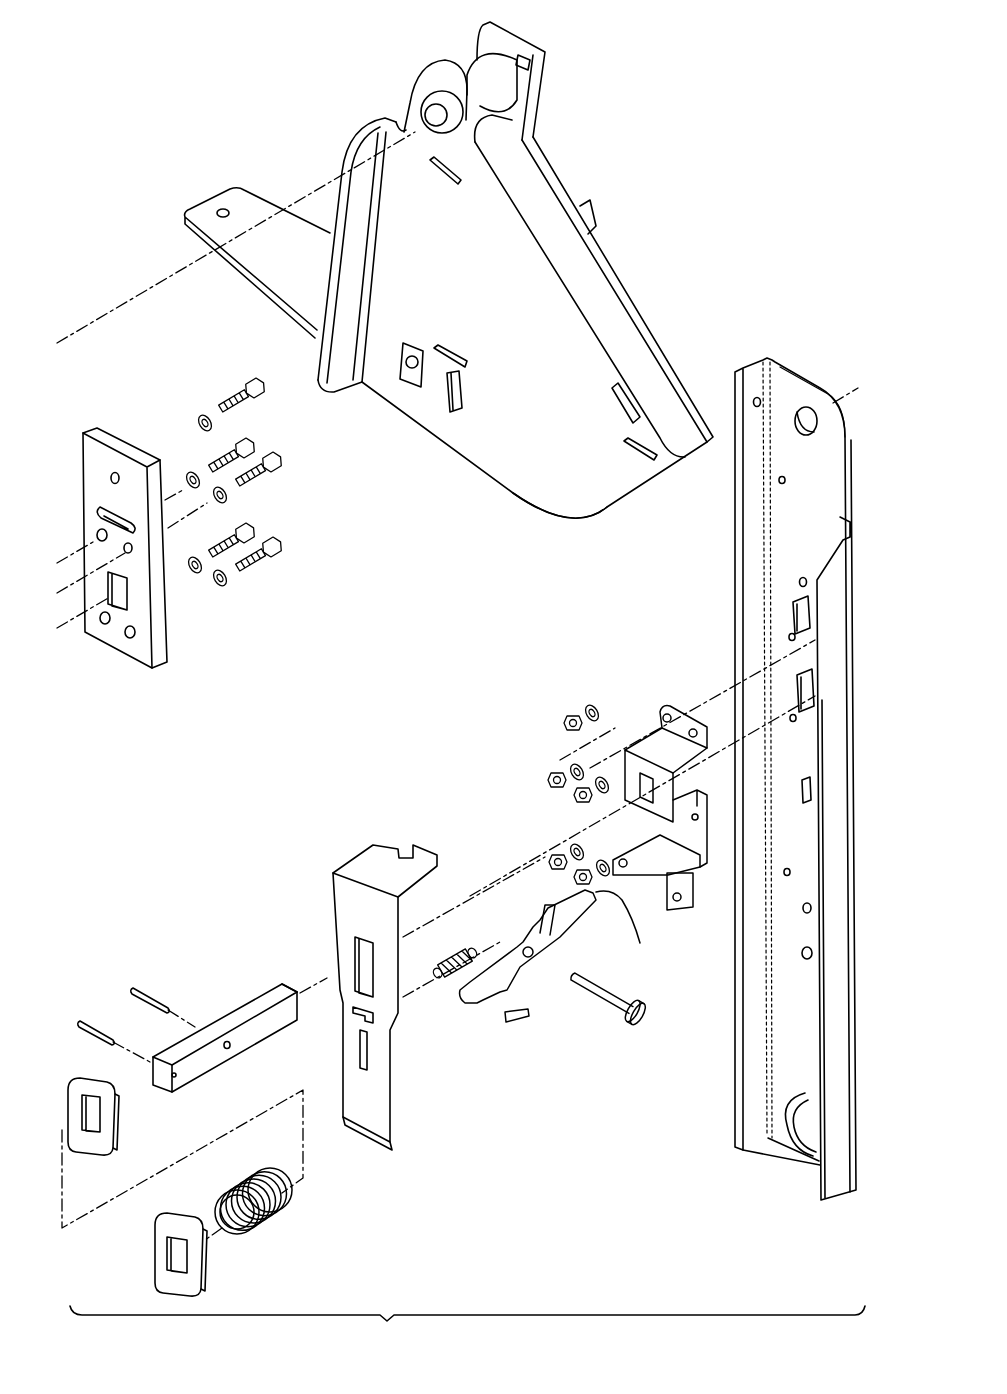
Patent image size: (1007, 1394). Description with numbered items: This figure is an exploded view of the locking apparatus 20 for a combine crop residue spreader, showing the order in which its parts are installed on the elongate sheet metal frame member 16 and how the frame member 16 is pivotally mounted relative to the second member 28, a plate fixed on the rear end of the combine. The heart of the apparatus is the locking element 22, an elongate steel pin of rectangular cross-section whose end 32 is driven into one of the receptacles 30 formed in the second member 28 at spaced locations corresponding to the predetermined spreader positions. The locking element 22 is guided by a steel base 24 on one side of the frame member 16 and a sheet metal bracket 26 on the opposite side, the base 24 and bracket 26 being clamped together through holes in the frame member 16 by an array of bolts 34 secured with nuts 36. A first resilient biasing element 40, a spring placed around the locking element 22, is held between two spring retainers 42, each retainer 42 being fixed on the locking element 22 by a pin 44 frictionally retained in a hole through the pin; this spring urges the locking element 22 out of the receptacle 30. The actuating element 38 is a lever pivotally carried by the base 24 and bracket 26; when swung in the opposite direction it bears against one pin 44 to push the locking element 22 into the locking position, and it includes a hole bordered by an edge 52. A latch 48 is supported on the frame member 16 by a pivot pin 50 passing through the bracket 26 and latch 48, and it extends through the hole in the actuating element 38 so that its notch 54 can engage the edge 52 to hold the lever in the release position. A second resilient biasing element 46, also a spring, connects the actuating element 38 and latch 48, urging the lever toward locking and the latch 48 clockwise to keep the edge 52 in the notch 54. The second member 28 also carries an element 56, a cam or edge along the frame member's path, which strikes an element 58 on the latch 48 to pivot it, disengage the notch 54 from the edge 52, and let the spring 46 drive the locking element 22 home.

The frame member 16 is at (737, 1012).
The locking apparatus 20 is at (607, 1156).
The locking element 22 is at (245, 1003).
The base 24 is at (168, 640).
The bracket 26 is at (670, 705).
The second member 28 is at (630, 300).
The receptacles 30 is at (470, 402).
The end 32 is at (297, 983).
The bolts 34 is at (243, 392).
The nuts 36 is at (568, 718).
The actuating element 38 is at (393, 1103).
The first resilient biasing element 40 is at (282, 1223).
The spring retainers 42 is at (117, 1132).
The pins 44 is at (93, 1020).
The second resilient biasing element 46 is at (450, 962).
The latch 48 is at (470, 1003).
The pivot pin 50 is at (650, 1005).
The edge 52 is at (365, 1065).
The notch 54 is at (485, 997).
The element 56 is at (557, 512).
The element 58 is at (640, 943).